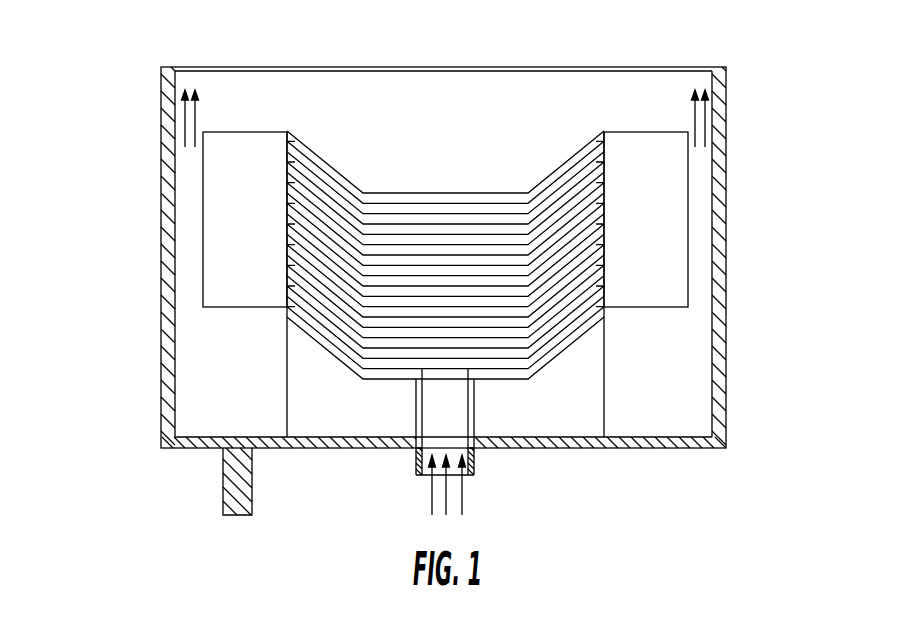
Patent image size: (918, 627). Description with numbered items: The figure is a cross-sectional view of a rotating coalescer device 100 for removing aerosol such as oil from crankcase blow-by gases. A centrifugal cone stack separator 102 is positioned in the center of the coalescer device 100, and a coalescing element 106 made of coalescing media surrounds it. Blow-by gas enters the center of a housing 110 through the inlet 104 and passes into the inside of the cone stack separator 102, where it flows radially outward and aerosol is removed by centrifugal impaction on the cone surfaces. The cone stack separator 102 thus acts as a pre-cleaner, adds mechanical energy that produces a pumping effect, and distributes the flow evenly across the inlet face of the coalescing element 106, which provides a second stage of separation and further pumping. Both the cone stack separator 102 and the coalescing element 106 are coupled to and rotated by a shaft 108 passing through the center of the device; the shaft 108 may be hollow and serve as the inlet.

The rotating coalescer device 100 is at (130, 68).
The centrifugal cone stack separator 102 is at (417, 150).
The inlet 104 is at (437, 483).
The coalescing element 106 is at (261, 230).
The shaft 108 is at (473, 458).
The housing 110 is at (722, 352).